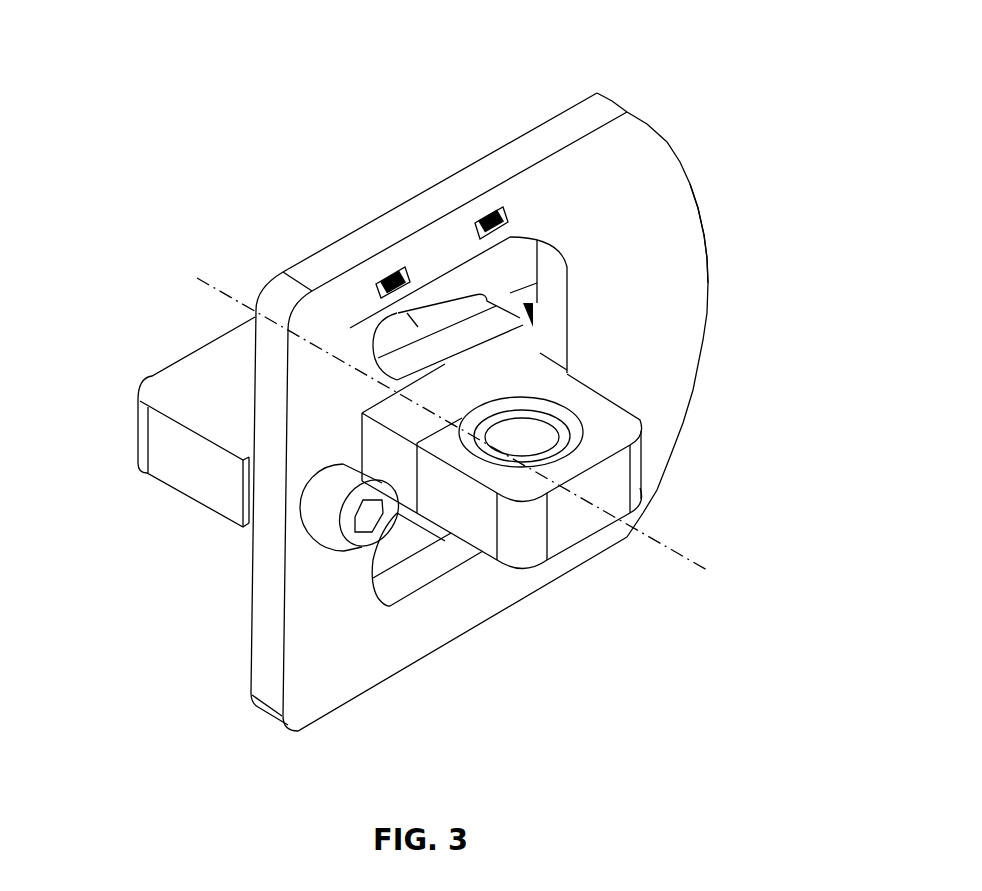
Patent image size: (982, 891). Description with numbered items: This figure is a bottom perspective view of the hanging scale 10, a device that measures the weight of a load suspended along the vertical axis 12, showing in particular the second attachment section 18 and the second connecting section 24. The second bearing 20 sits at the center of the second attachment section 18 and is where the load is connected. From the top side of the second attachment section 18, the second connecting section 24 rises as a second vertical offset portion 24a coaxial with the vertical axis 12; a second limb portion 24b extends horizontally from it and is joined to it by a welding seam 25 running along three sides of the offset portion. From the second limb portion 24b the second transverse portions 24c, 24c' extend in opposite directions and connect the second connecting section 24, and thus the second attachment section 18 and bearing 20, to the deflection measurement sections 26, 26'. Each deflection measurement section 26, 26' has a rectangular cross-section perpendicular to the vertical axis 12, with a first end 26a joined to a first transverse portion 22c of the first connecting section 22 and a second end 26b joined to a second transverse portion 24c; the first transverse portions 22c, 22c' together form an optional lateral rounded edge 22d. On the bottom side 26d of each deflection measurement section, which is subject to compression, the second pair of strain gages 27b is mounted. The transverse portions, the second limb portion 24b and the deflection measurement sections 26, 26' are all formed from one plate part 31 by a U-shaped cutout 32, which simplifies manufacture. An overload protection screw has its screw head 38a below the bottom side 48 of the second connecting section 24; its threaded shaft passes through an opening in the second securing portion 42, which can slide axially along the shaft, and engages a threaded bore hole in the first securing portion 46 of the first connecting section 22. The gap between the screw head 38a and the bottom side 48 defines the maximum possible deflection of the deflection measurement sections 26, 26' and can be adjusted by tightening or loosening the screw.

The hanging scale 10 is at (165, 120).
The vertical axis 12 is at (677, 553).
The second attachment section 18 is at (562, 522).
The second bearing 20 is at (533, 433).
The first connecting section 22 is at (520, 257).
The first transverse portion 22c is at (715, 196).
The first transverse portion 22c' is at (732, 457).
The lateral rounded edge 22d is at (707, 247).
The second connecting section 24 is at (413, 400).
The second vertical offset portion 24a is at (397, 462).
The second limb portion 24b is at (428, 338).
The second transverse portion 24c is at (206, 307).
The second transverse portion 24c' is at (233, 725).
The welding seam 25 is at (515, 365).
The deflection measurement section 26 is at (430, 207).
The deflection measurement section 26' is at (442, 600).
The first end 26a is at (517, 208).
The second end 26b is at (470, 233).
The bottom side 26d is at (490, 192).
The second pair of strain gages 27b is at (393, 270).
The plate part 31 is at (630, 148).
The U-shaped cutout 32 is at (390, 593).
The screw head 38a is at (327, 518).
The second securing portion 42 is at (300, 458).
The first securing portion 46 is at (167, 452).
The bottom side 48 is at (317, 605).